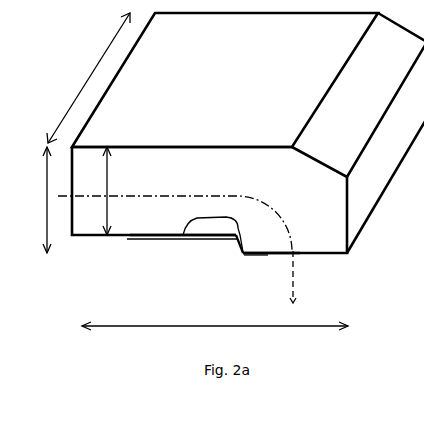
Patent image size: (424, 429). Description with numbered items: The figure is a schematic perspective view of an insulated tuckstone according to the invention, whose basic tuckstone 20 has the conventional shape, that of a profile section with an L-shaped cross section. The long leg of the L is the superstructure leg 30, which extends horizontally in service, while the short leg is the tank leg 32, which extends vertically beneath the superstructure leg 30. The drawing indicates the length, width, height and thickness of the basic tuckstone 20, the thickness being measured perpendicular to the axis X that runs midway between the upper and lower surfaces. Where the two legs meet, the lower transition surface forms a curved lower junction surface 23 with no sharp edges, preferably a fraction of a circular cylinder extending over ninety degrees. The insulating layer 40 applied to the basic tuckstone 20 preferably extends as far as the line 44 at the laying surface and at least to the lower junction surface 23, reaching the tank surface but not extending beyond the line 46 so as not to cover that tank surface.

The basic tuckstone 20 is at (215, 171).
The curved lower junction surface 23 is at (182, 238).
The superstructure leg 30 is at (145, 182).
The tank leg 32 is at (301, 221).
The insulating layer 40 is at (238, 240).
The line 44 is at (127, 239).
The line 46 is at (276, 253).